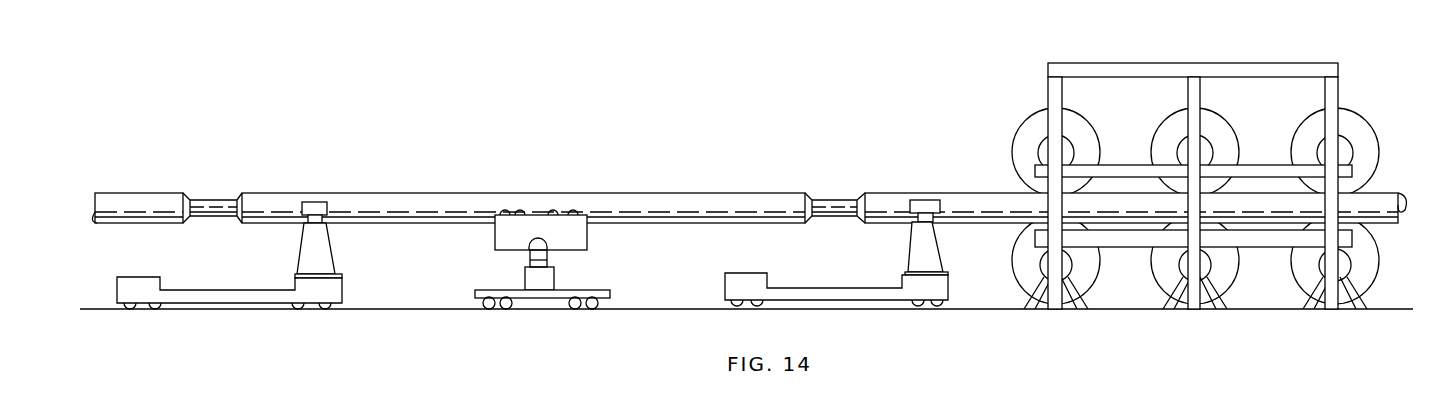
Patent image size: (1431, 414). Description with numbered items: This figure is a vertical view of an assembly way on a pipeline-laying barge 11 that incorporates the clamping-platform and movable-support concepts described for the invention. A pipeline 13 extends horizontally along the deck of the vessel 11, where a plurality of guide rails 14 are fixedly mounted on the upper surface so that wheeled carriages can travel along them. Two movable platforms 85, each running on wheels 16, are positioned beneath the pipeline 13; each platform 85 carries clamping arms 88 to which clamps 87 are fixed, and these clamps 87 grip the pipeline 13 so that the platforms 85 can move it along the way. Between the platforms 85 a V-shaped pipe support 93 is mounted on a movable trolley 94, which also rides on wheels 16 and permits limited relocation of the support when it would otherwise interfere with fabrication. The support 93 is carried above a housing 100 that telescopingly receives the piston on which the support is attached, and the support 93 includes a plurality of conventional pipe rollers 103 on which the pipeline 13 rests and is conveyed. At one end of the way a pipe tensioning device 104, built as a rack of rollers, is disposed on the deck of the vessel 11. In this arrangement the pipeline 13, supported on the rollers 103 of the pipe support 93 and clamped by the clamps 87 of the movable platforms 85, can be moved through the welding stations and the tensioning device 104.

The pipeline-laying barge 11 is at (830, 331).
The pipeline 13 is at (420, 193).
The guide rails 14 is at (394, 309).
The wheels 16 is at (331, 305).
The platforms 85 is at (205, 290).
The clamps 87 is at (312, 202).
The clamping arms 88 is at (333, 235).
The V-shaped pipe support 93 is at (588, 242).
The movable trolleys 94 is at (501, 290).
The housing 100 is at (556, 277).
The pipe rollers 103 is at (577, 212).
The pipe tensioning device 104 is at (1208, 63).